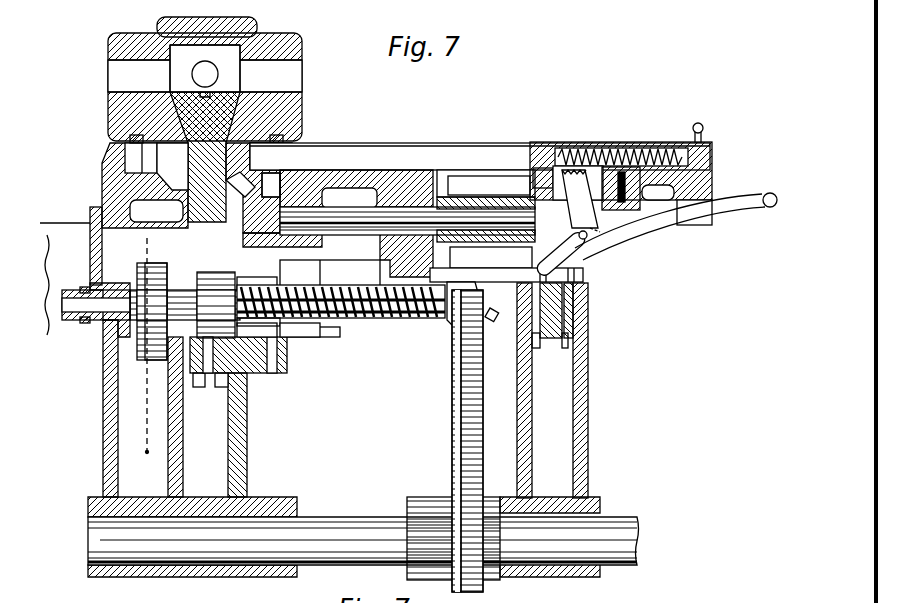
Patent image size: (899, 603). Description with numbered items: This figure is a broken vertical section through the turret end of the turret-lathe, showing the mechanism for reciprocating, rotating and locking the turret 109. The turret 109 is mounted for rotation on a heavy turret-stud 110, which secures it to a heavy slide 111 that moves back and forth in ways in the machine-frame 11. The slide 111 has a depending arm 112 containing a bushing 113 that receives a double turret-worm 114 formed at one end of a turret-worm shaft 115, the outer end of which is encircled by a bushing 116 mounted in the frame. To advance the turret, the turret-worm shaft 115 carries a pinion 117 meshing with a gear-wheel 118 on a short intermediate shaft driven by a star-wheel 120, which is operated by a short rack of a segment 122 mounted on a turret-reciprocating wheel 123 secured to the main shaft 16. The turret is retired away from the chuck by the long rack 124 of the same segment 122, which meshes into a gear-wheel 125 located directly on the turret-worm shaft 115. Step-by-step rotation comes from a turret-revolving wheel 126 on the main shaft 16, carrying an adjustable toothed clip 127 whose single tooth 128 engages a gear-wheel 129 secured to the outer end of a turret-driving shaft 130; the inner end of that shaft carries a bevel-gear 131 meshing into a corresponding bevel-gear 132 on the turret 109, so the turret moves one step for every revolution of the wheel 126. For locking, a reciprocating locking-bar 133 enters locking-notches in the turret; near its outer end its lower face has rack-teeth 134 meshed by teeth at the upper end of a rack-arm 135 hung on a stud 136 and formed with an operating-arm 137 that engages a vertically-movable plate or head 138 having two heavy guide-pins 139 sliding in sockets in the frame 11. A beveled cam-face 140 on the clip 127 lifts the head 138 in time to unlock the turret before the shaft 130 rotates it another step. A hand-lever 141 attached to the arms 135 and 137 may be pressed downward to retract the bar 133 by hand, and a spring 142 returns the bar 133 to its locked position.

The machine-frame 11 is at (103, 391).
The main shaft 16 is at (342, 517).
The turret 109 is at (288, 110).
The turret-stud 110 is at (190, 140).
The slide 111 is at (102, 175).
The depending arm 112 is at (400, 268).
The bushing 113 is at (398, 320).
The double turret-worm 114 is at (344, 328).
The turret-worm shaft 115 is at (185, 290).
The bushing 116 is at (96, 318).
The pinion 117 is at (140, 340).
The gear-wheel 118 is at (160, 360).
The star-wheel 120 is at (270, 284).
The segment 122 is at (280, 340).
The turret-reciprocating wheel 123 is at (247, 392).
The long rack 124 is at (205, 387).
The gear-wheel 125 is at (215, 272).
The turret-revolving wheel 126 is at (476, 366).
The adjustable toothed clip 127 is at (463, 300).
The single tooth 128 is at (472, 259).
The gear-wheel 129 is at (486, 206).
The turret-driving shaft 130 is at (407, 221).
The bevel-gear 131 is at (255, 186).
The bevel-gear 132 is at (282, 158).
The locking-bar 133 is at (480, 156).
The rack-teeth 134 is at (545, 165).
The rack-arm 135 is at (578, 210).
The stud 136 is at (590, 240).
The operating-arm 137 is at (560, 254).
The plate or head 138 is at (506, 275).
The guide-pins 139 is at (568, 320).
The beveled cam-face 140 is at (501, 304).
The hand-lever 141 is at (735, 203).
The spring 142 is at (660, 150).